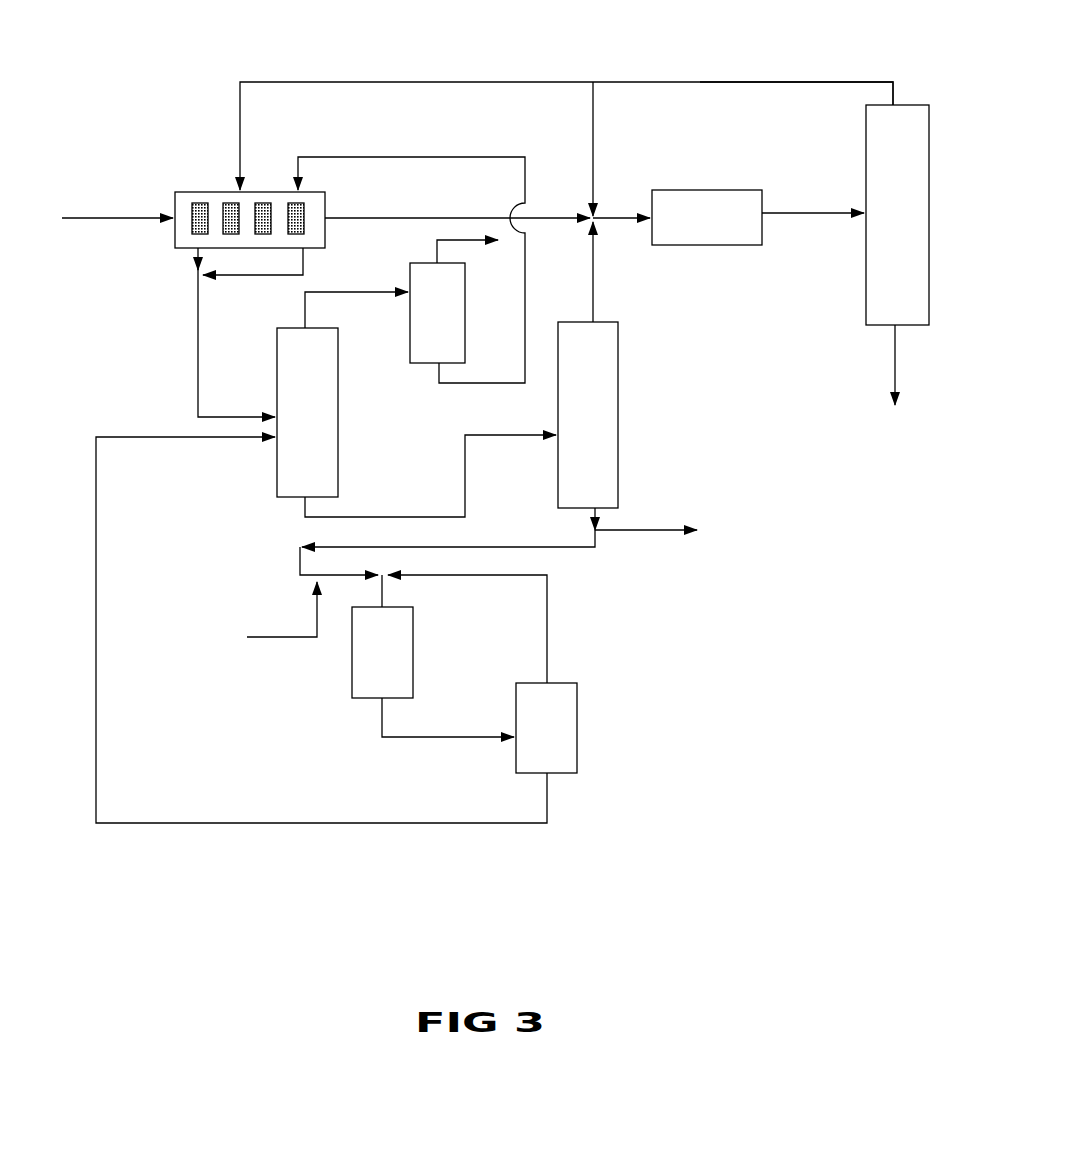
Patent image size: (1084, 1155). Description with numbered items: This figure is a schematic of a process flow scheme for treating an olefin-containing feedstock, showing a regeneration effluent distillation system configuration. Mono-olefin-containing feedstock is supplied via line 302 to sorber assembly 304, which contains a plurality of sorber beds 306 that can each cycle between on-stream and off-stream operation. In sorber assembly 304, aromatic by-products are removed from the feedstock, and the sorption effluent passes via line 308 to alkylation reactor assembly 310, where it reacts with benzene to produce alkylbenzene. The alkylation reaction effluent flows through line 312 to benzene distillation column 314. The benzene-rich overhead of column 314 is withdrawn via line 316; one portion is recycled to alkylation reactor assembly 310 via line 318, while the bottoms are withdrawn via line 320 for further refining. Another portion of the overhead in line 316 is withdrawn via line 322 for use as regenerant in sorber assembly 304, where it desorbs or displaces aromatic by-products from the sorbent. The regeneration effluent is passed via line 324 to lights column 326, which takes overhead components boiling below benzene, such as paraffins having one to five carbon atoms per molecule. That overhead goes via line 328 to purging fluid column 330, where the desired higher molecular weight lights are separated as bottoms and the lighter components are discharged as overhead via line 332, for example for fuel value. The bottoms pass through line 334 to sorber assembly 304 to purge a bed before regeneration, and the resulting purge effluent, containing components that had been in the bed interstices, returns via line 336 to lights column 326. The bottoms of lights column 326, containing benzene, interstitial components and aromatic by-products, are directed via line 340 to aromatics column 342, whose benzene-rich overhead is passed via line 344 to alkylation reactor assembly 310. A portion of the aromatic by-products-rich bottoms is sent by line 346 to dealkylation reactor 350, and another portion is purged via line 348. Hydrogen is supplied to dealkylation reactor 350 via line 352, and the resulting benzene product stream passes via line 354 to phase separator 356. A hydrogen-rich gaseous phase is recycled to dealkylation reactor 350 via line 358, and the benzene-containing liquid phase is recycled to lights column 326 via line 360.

The line 302 is at (132, 220).
The sorber assembly 304 is at (193, 190).
The sorber beds 306 is at (198, 234).
The line 308 is at (372, 218).
The alkylation reactor assembly 310 is at (734, 232).
The line 312 is at (830, 213).
The benzene distillation column 314 is at (922, 217).
The line 316 is at (735, 80).
The line 318 is at (595, 152).
The line 320 is at (893, 340).
The line 322 is at (373, 80).
The line 324 is at (197, 355).
The lights column 326 is at (332, 413).
The line 328 is at (307, 300).
The purging fluid column 330 is at (462, 336).
The line 332 is at (433, 248).
The line 334 is at (465, 387).
The line 336 is at (287, 275).
The line 340 is at (303, 505).
The aromatics column 342 is at (613, 422).
The line 344 is at (595, 297).
The line 346 is at (567, 547).
The line 348 is at (648, 528).
The dealkylation reactor 350 is at (407, 670).
The line 352 is at (287, 640).
The line 354 is at (427, 740).
The phase separator 356 is at (571, 738).
The line 358 is at (548, 610).
The line 360 is at (550, 807).